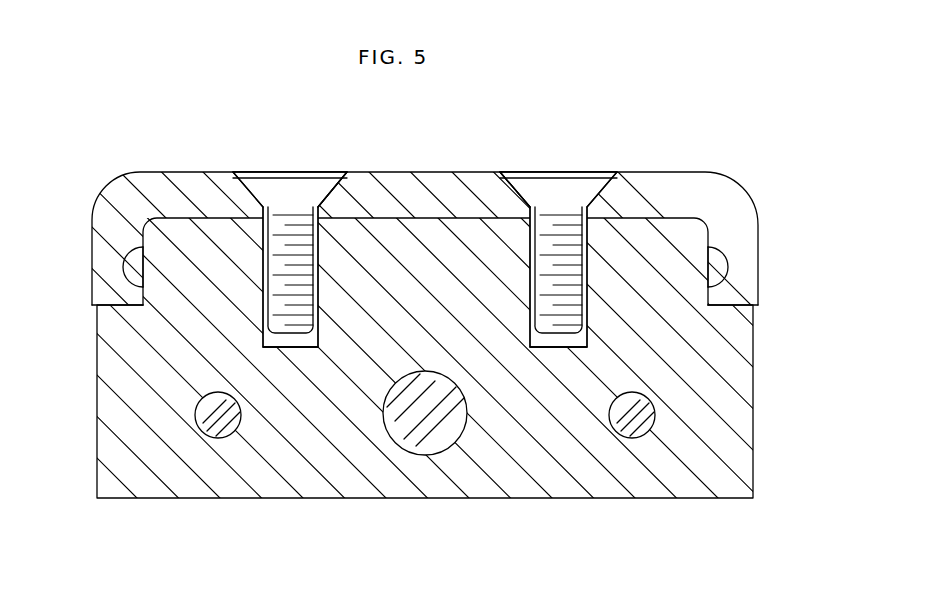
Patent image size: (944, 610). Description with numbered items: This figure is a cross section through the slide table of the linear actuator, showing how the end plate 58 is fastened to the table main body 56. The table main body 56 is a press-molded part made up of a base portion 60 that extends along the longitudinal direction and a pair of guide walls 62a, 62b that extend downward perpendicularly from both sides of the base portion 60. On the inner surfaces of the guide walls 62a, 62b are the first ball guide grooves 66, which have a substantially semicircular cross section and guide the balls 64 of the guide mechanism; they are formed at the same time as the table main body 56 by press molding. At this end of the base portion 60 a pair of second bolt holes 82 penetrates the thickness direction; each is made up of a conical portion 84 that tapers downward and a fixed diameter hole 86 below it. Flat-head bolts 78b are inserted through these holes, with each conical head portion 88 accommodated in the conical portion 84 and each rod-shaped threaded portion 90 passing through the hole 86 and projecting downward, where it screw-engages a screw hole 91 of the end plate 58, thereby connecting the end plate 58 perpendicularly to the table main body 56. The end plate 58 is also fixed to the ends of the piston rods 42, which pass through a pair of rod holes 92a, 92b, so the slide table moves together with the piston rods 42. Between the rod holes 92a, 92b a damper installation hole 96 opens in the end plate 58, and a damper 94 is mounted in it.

The piston rods 42 is at (228, 440).
The table main body 56 is at (706, 163).
The end plate 58 is at (754, 378).
The base portion 60 is at (408, 170).
The guide wall 62a is at (99, 288).
The guide wall 62b is at (762, 290).
The balls 64 is at (130, 236).
The first ball guide grooves 66 is at (125, 260).
The bolts 78b is at (311, 170).
The second bolt holes 82 is at (243, 172).
The conical portions 84 is at (330, 172).
The fixed diameter holes 86 is at (266, 238).
The head portion 88 is at (280, 184).
The threaded portion 90 is at (300, 313).
The screw holes 91 is at (312, 280).
The rod hole 92a is at (197, 411).
The rod hole 92b is at (654, 411).
The damper 94 is at (445, 452).
The damper installation hole 96 is at (412, 447).